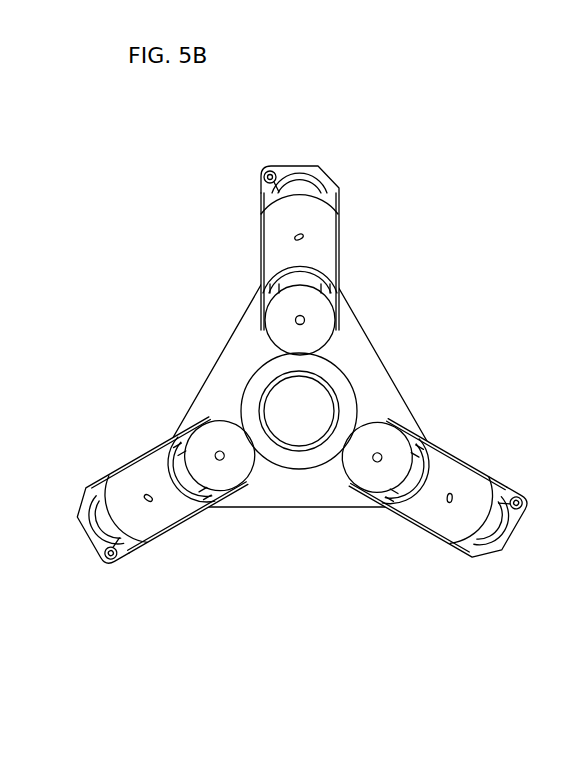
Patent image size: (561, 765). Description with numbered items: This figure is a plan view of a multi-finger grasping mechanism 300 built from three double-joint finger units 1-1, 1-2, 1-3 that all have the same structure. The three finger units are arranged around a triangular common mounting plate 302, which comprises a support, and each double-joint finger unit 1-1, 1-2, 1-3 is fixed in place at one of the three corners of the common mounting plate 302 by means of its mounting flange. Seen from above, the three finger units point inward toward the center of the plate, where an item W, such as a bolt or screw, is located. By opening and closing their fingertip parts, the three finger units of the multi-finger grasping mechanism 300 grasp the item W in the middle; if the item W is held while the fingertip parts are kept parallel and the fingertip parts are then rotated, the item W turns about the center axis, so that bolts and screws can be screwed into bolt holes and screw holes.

The multi-finger grasping mechanism 300 is at (475, 301).
The common mounting plate 302 is at (293, 485).
The double-joint finger unit 1-1 is at (167, 535).
The double-joint finger unit 1-2 is at (423, 531).
The double-joint finger unit 1-3 is at (253, 243).
The item W is at (345, 383).